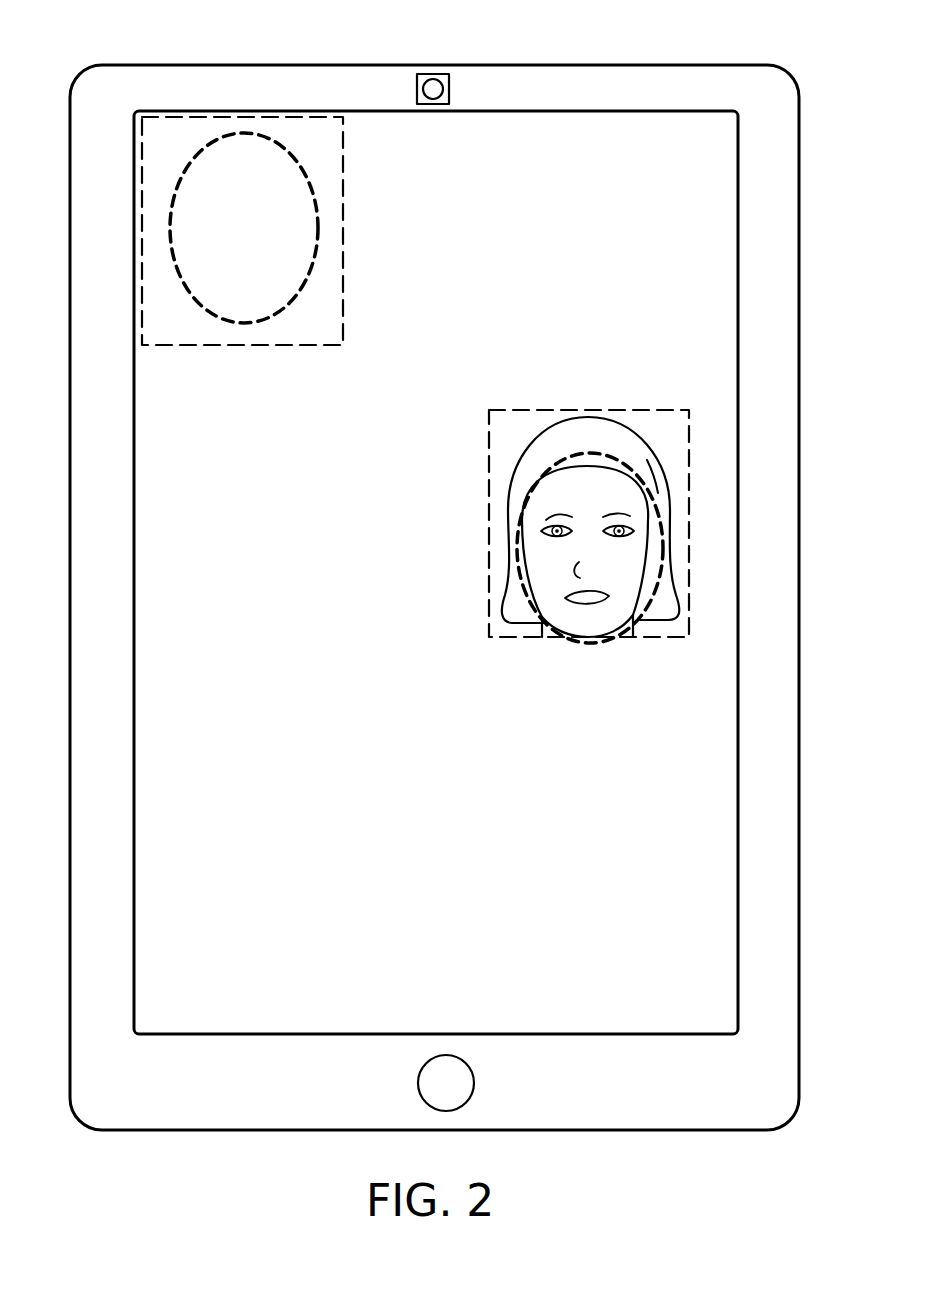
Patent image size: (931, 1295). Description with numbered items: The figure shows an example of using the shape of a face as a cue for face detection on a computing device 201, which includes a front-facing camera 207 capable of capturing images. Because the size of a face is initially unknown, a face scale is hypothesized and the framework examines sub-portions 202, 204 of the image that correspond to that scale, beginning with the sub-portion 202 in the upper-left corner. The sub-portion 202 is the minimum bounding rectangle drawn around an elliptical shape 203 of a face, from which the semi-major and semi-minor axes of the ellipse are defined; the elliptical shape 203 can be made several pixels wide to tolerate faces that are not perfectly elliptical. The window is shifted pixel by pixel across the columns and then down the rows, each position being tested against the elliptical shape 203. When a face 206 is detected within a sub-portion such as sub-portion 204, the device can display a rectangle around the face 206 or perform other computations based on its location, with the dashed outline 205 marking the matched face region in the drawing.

The computing device 201 is at (280, 64).
The sub-portion of the image 202 is at (345, 259).
The elliptical shape 203 is at (317, 188).
The sub-portion of the image 204 is at (628, 405).
The face region outline 205 is at (517, 548).
The face 206 is at (524, 430).
The front-facing camera 207 is at (431, 73).